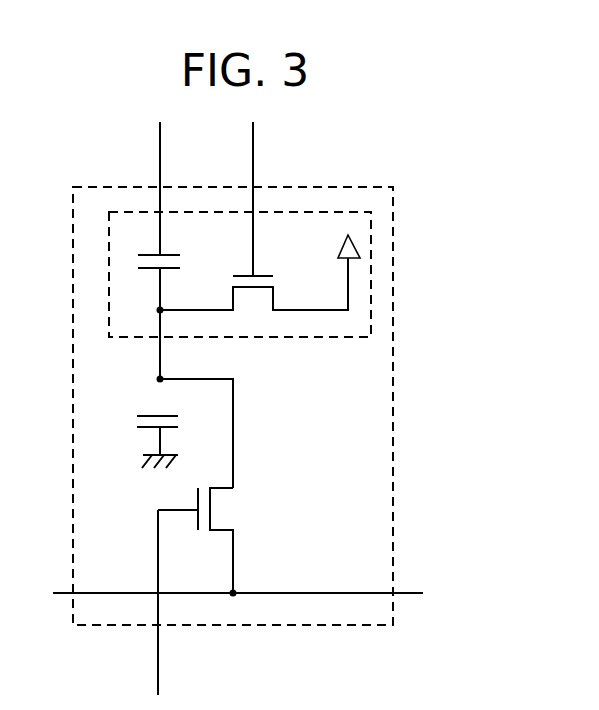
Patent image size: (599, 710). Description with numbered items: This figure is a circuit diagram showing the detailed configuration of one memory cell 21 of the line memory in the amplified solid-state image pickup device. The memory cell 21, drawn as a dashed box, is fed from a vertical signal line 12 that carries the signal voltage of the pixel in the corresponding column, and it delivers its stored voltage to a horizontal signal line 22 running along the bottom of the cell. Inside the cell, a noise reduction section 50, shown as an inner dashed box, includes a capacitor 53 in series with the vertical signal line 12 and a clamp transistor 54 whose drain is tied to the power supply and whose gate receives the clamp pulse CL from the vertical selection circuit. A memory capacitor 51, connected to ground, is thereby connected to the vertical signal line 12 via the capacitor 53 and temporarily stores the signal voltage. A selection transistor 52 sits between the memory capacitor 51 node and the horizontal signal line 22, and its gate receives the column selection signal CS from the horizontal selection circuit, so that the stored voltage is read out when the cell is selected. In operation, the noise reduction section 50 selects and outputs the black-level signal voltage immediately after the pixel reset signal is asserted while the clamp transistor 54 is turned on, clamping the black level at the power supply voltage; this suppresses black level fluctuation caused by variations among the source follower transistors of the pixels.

The vertical signal line 12 is at (159, 147).
The memory cell 21 is at (394, 413).
The first horizontal signal line 22 is at (413, 592).
The noise reduction section 50 is at (316, 338).
The memory capacitor 51 is at (153, 412).
The selection transistor 52 is at (222, 490).
The capacitor 53 is at (169, 255).
The clamp transistor 54 is at (267, 271).
The clamp pulse CL is at (255, 147).
The column selection signal CS is at (160, 648).